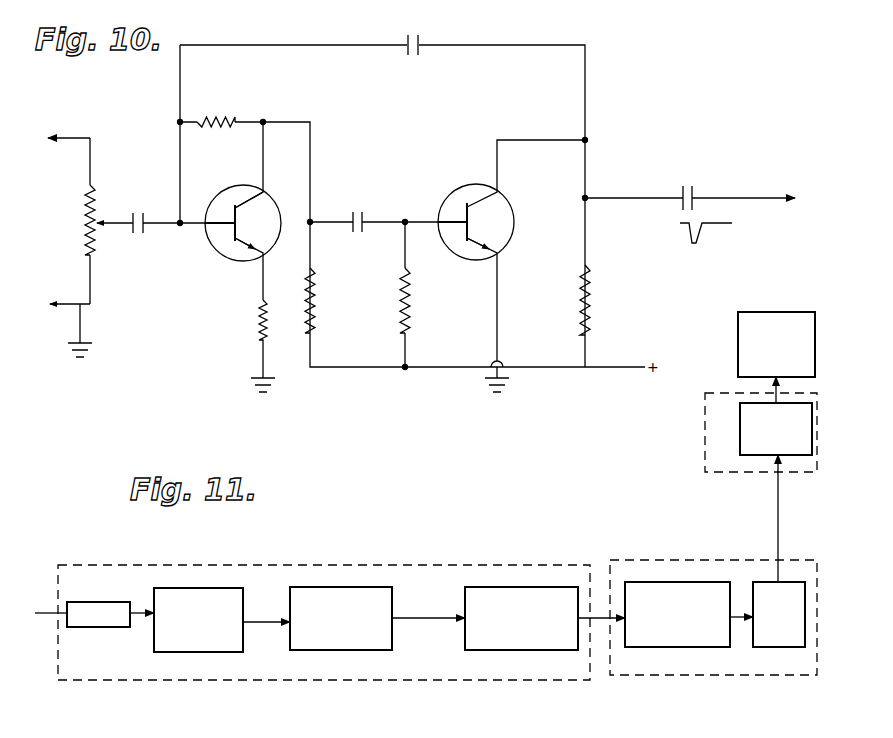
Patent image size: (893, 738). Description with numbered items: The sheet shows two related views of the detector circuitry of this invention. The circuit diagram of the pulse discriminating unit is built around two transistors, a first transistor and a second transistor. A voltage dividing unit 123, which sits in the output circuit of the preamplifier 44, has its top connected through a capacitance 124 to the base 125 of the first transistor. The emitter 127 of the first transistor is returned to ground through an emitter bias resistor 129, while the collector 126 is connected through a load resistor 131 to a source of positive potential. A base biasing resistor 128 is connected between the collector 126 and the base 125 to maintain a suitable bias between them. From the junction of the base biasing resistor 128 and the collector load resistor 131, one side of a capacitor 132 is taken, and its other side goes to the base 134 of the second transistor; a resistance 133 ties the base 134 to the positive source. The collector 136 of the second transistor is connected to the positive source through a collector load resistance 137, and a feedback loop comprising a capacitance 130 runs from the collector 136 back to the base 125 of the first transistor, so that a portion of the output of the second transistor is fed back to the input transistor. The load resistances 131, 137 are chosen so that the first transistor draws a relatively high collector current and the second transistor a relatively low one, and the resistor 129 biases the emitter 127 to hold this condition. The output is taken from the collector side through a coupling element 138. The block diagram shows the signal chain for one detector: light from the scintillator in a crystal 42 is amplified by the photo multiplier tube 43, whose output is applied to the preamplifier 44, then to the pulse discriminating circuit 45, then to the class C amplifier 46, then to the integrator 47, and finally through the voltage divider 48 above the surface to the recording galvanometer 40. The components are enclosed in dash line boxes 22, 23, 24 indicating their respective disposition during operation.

In FIG. 10, the voltage dividing unit 123 is at (86, 258).
In FIG. 10, the capacitance 124 is at (148, 232).
In FIG. 10, the base 125 is at (217, 247).
In FIG. 10, the collector 126 is at (247, 190).
In FIG. 10, the emitter 127 is at (250, 255).
In FIG. 10, the base biasing resistor 128 is at (214, 120).
In FIG. 10, the emitter bias resistor 129 is at (258, 320).
In FIG. 10, the capacitance 130 is at (421, 52).
In FIG. 10, the load resistor 131 is at (318, 288).
In FIG. 10, the capacitor 132 is at (366, 220).
In FIG. 10, the resistance 133 is at (382, 307).
In FIG. 10, the base 134 is at (462, 207).
In FIG. 10, the collector 136 is at (488, 185).
In FIG. 10, the collector load resistance 137 is at (580, 314).
In FIG. 10, the output capacitor 138 is at (682, 206).
In FIG. 11, the dash line box 22 is at (703, 410).
In FIG. 11, the dash line box 23 is at (262, 567).
In FIG. 11, the dash line box 24 is at (686, 560).
In FIG. 11, the recording galvanometer 40 is at (738, 362).
In FIG. 11, the crystal 42 is at (92, 603).
In FIG. 11, the photo multiplier tube 43 is at (195, 590).
In FIG. 11, the preamplifier 44 is at (312, 592).
In FIG. 11, the pulse discriminating circuit 45 is at (530, 590).
In FIG. 11, the amplifier 46 is at (677, 605).
In FIG. 11, the integrator 47 is at (778, 648).
In FIG. 11, the voltage divider 48 is at (740, 437).